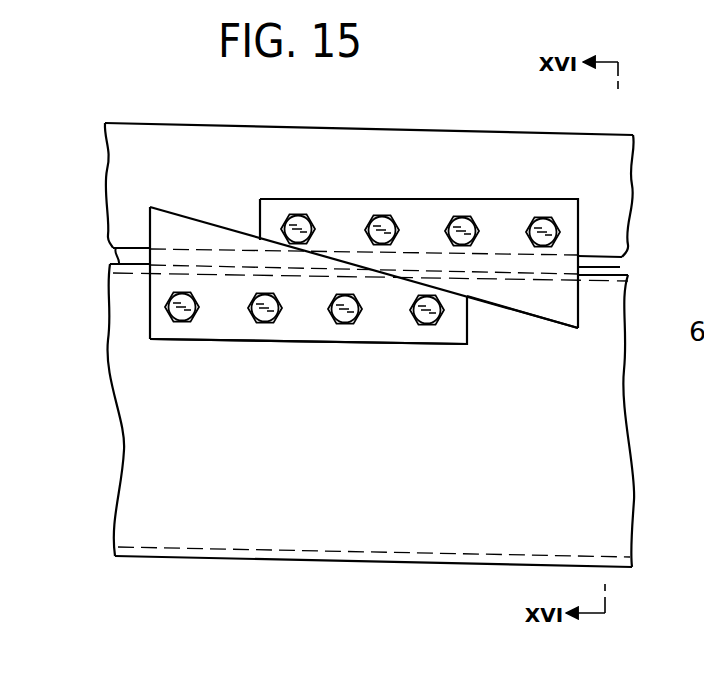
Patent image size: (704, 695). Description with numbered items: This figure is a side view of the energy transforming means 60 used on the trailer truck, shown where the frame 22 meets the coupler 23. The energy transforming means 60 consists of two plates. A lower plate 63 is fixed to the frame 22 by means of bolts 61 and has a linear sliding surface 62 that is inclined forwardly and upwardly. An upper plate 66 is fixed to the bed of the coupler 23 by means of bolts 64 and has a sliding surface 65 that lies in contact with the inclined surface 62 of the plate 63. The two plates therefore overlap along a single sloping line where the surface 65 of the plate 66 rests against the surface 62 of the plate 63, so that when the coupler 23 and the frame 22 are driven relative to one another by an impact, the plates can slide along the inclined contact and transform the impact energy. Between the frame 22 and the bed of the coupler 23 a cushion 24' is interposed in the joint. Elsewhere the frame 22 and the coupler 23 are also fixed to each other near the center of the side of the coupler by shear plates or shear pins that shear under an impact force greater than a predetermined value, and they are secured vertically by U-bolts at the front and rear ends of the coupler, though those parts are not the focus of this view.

The frame 22 is at (614, 457).
The coupler 23 is at (120, 163).
The cushion 24' is at (401, 261).
The energy transforming means 60 is at (300, 371).
The bolts 61 is at (427, 325).
The linear sliding surface 62 is at (213, 228).
The plate 63 is at (213, 312).
The bolts 64 is at (543, 215).
The sliding surface 65 is at (487, 303).
The plate 66 is at (413, 199).